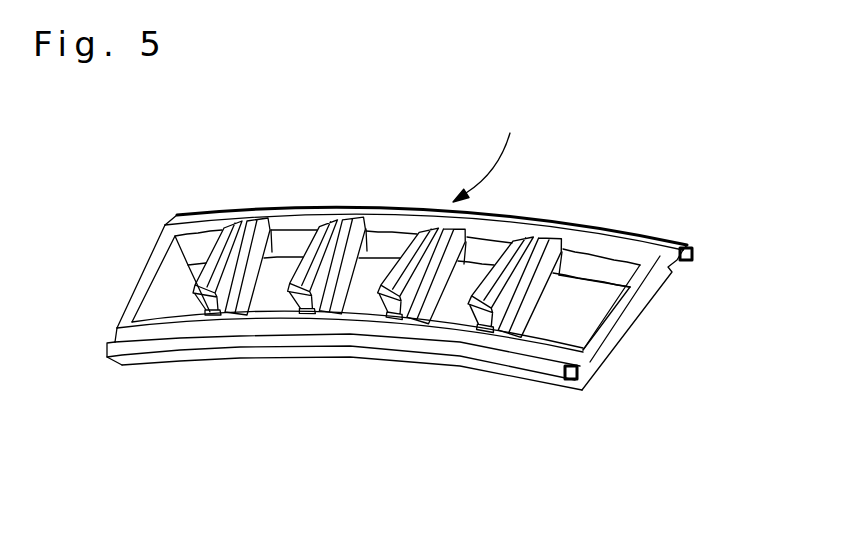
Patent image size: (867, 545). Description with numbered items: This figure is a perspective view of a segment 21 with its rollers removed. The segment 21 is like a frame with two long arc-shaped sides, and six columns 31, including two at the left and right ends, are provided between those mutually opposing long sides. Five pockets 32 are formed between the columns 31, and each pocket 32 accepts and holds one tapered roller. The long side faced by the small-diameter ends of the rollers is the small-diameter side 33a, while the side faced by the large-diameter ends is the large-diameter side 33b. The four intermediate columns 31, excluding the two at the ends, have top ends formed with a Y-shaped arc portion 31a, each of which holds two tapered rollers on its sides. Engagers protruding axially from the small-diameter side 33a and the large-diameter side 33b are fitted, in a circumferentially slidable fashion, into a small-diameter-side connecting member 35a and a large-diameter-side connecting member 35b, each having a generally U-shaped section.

The segment 21 is at (492, 154).
The column 31 is at (613, 328).
The Y-shaped arc portion 31a is at (313, 253).
The pocket 32 is at (582, 302).
The small-diameter side 33a is at (450, 337).
The large-diameter side 33b is at (500, 230).
The small-diameter-side connecting member 35a is at (543, 368).
The large-diameter-side connecting member 35b is at (693, 248).